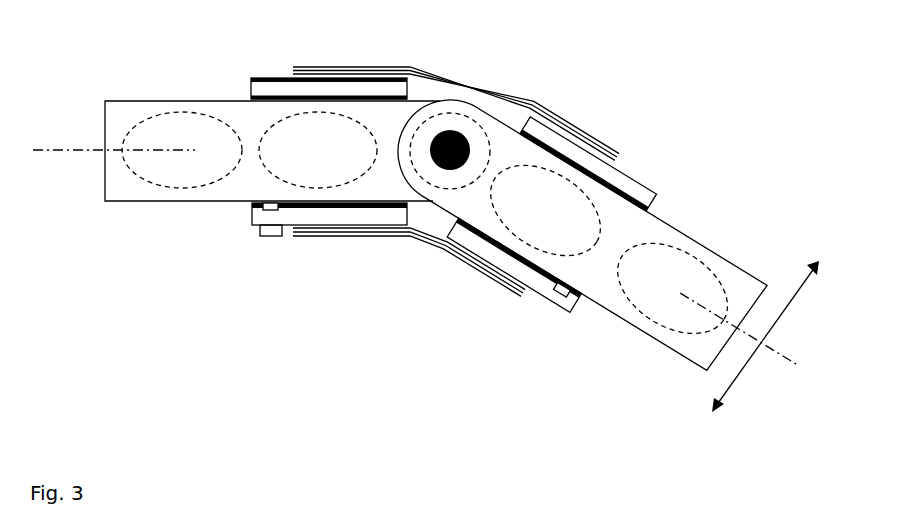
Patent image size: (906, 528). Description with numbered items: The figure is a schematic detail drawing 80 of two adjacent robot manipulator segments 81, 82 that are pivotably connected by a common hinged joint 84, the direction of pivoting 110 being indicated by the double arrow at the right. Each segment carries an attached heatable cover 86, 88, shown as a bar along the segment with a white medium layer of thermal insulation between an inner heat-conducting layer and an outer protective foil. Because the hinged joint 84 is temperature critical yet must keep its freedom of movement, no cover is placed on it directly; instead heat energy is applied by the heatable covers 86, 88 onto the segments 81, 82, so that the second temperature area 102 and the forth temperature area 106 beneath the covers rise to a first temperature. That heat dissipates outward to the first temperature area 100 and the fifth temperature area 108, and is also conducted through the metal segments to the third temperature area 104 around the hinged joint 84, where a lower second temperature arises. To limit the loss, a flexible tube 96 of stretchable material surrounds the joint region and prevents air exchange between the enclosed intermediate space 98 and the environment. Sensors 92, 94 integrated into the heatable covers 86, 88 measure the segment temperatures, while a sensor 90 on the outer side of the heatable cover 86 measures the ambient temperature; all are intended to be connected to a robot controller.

The schematic detail drawing 80 is at (772, 412).
The manipulator segment 81 is at (637, 232).
The manipulator segment 82 is at (126, 112).
The hinged joint 84 is at (450, 132).
The heatable cover 86 is at (267, 88).
The heatable cover 88 is at (610, 173).
The sensor 90 is at (268, 237).
The sensor 92 is at (253, 205).
The sensor 94 is at (580, 297).
The flexible tube 96 is at (415, 71).
The intermediate space 98 is at (508, 114).
The first temperature area 100 is at (182, 150).
The second temperature area 102 is at (318, 150).
The third temperature area 104 is at (450, 151).
The forth temperature area 106 is at (546, 211).
The fifth temperature area 108 is at (673, 289).
The direction of pivoting 110 is at (769, 336).